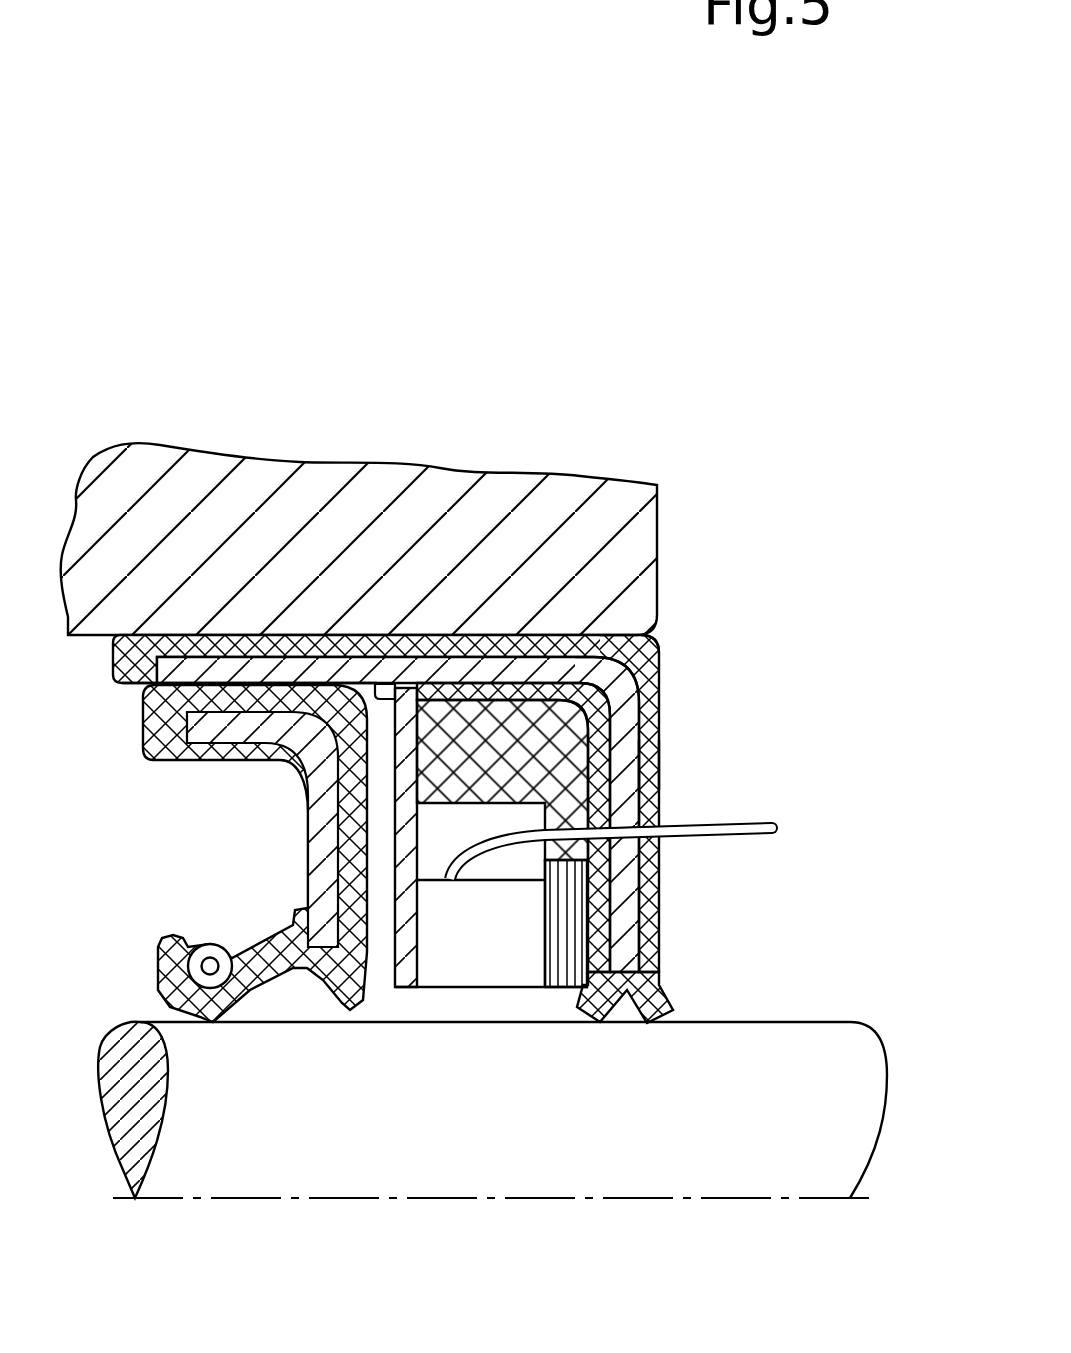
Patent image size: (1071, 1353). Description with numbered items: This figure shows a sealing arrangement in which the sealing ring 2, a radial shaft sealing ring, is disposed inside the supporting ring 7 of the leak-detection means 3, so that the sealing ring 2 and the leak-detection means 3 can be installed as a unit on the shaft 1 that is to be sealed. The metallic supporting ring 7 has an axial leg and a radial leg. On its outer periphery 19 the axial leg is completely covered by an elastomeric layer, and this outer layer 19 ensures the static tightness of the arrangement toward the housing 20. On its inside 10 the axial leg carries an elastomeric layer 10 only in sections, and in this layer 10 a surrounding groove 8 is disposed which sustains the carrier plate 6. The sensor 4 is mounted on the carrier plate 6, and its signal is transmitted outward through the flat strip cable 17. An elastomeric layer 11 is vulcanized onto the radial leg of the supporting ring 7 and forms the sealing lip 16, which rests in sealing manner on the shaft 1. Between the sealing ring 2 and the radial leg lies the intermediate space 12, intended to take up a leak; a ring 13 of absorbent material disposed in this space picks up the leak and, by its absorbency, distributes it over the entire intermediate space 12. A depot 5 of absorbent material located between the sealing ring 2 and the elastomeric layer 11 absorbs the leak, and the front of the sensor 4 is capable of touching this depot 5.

The shaft 1 is at (473, 1175).
The sealing ring 2 is at (293, 815).
The leak-detection means 3 is at (672, 680).
The sensor 4 is at (483, 953).
The depot 5 is at (568, 957).
The carrier plate 6 is at (407, 953).
The supporting ring 7 is at (660, 665).
The groove 8 is at (420, 686).
The inner elastomeric layer 10 is at (660, 810).
The elastomeric layer 11 is at (660, 762).
The intermediate space 12 is at (440, 838).
The ring of absorbent material 13 is at (528, 725).
The sealing lip 16 is at (600, 1022).
The flat strip cable 17 is at (717, 833).
The outer elastomeric layer 19 is at (240, 645).
The housing 20 is at (358, 497).